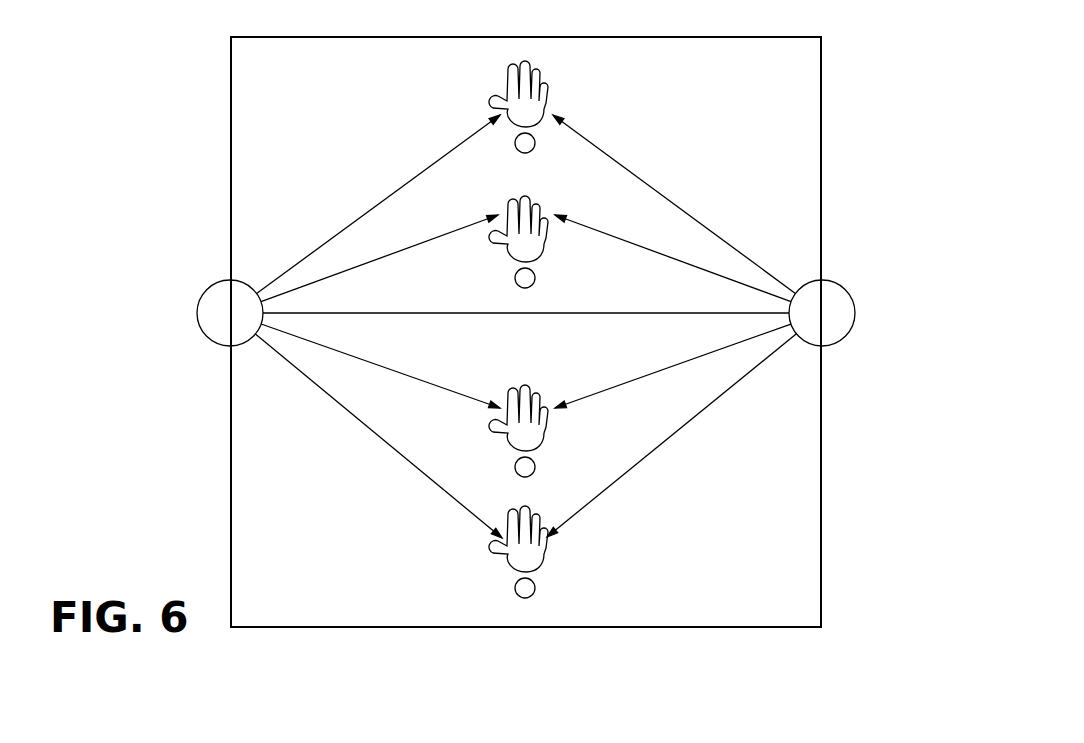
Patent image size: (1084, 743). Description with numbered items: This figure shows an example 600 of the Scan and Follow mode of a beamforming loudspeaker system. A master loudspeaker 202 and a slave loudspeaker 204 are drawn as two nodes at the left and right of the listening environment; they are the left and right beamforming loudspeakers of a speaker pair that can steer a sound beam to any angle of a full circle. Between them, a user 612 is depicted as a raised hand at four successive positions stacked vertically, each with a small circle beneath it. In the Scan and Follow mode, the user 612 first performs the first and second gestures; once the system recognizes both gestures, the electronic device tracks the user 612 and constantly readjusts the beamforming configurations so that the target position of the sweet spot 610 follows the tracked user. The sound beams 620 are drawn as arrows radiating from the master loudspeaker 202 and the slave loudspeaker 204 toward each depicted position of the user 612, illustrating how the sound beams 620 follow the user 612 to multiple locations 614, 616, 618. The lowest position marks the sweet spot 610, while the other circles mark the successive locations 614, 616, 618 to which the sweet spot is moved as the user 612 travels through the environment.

The example of Scan and Follow mode 600 is at (875, 94).
The master loudspeaker 202 is at (222, 281).
The slave loudspeaker 204 is at (843, 283).
The user 612 is at (547, 86).
The sound beams 620 is at (377, 200).
The location 618 is at (516, 146).
The location 616 is at (536, 278).
The location 614 is at (537, 465).
The sweet spot 610 is at (536, 588).